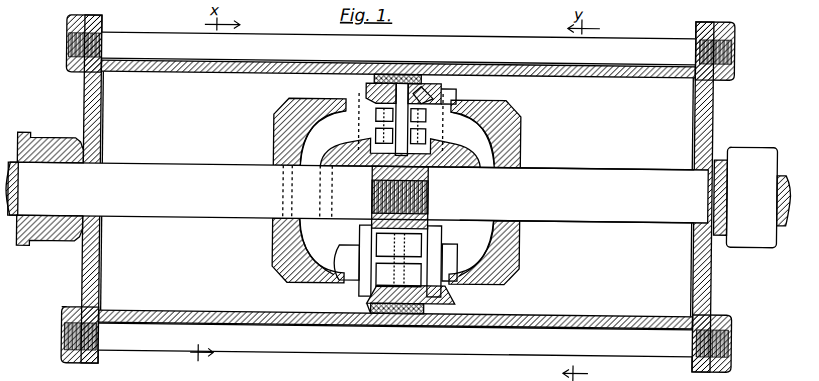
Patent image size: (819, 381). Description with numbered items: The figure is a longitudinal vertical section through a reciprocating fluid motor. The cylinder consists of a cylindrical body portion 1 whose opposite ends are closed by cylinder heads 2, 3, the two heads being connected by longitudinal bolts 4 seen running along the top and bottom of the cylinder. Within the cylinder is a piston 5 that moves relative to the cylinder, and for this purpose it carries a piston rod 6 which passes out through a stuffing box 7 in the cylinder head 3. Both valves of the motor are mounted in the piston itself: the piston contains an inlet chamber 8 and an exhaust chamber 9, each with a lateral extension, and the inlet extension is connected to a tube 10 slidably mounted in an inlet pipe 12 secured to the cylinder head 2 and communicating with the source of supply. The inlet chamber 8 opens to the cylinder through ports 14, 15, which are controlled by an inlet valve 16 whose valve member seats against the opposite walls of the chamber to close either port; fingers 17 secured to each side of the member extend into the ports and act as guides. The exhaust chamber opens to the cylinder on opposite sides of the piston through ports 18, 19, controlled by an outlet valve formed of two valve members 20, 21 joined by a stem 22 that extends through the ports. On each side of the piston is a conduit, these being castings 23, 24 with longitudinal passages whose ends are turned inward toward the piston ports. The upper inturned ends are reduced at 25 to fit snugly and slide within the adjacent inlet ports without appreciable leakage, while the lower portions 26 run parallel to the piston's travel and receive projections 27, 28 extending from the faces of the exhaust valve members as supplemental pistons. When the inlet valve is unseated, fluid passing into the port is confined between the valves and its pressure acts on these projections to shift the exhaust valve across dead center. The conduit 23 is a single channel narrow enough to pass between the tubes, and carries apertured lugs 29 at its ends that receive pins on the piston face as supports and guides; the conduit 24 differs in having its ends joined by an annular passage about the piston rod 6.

The cylindrical body portion 1 is at (617, 62).
The cylinder head 2 is at (712, 112).
The cylinder head 3 is at (83, 94).
The longitudinal bolts 4 is at (521, 34).
The piston 5 is at (402, 80).
The piston rod 6 is at (137, 168).
The stuffing box 7 is at (78, 222).
The inlet chamber 8 is at (392, 71).
The exhaust chamber 9 is at (392, 312).
The inlet tube 10 is at (606, 176).
The inlet pipe 12 is at (755, 236).
The inlet port 14 is at (440, 92).
The inlet port 15 is at (365, 95).
The inlet valve 16 is at (420, 80).
The fingers 17 is at (375, 140).
The exhaust port 18 is at (430, 300).
The exhaust port 19 is at (372, 302).
The exhaust valve member 20 is at (442, 280).
The exhaust valve member 21 is at (360, 268).
The stem 22 is at (392, 250).
The conduit casting 23 is at (518, 140).
The conduit casting 24 is at (273, 232).
The reduced upper end 25 is at (342, 115).
The lower conduit portion 26 is at (305, 270).
The projection 27 is at (458, 253).
The projection 28 is at (340, 250).
The apertured lugs 29 is at (382, 183).